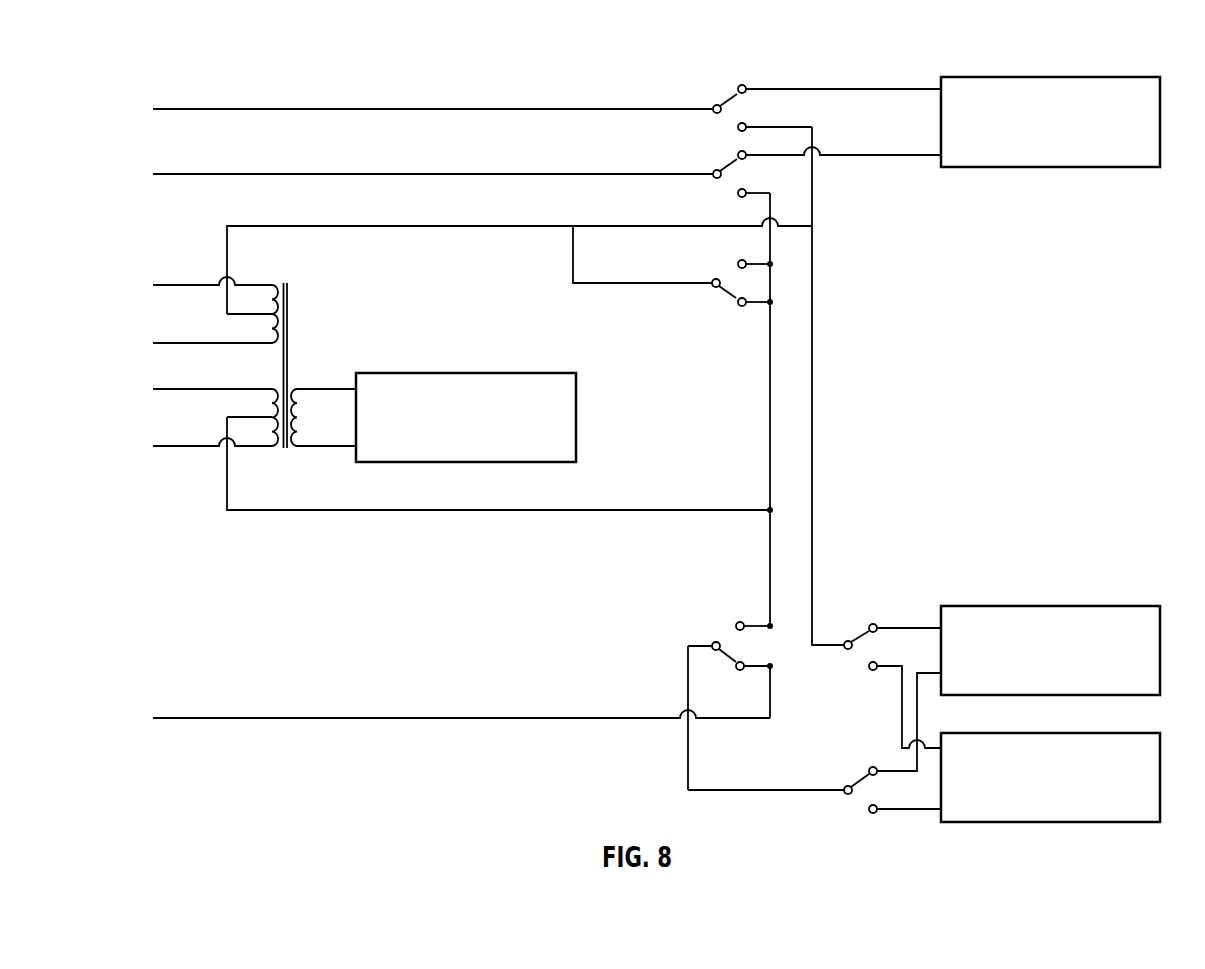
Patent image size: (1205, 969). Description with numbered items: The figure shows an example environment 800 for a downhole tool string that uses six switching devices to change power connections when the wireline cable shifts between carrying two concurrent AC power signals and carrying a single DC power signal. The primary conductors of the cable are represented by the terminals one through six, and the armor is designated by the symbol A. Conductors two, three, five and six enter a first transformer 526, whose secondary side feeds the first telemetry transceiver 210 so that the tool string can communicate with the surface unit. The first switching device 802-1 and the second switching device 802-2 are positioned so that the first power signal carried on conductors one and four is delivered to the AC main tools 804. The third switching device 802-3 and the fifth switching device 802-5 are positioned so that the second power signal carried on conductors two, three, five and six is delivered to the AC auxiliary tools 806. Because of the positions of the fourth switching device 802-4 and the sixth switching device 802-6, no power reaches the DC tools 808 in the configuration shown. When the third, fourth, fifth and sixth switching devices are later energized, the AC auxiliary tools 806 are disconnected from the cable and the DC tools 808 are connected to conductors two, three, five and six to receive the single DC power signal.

The example environment 800 is at (154, 72).
The first transformer 526 is at (292, 297).
The first telemetry transceiver 210 is at (417, 373).
The first switching device 802-1 is at (723, 95).
The second switching device 802-2 is at (726, 160).
The third switching device 802-3 is at (718, 302).
The fourth switching device 802-4 is at (726, 631).
The fifth switching device 802-5 is at (860, 626).
The sixth switching device 802-6 is at (855, 769).
The AC main tools 804 is at (1100, 77).
The AC auxiliary tools 806 is at (1100, 606).
The DC tools 808 is at (1100, 733).